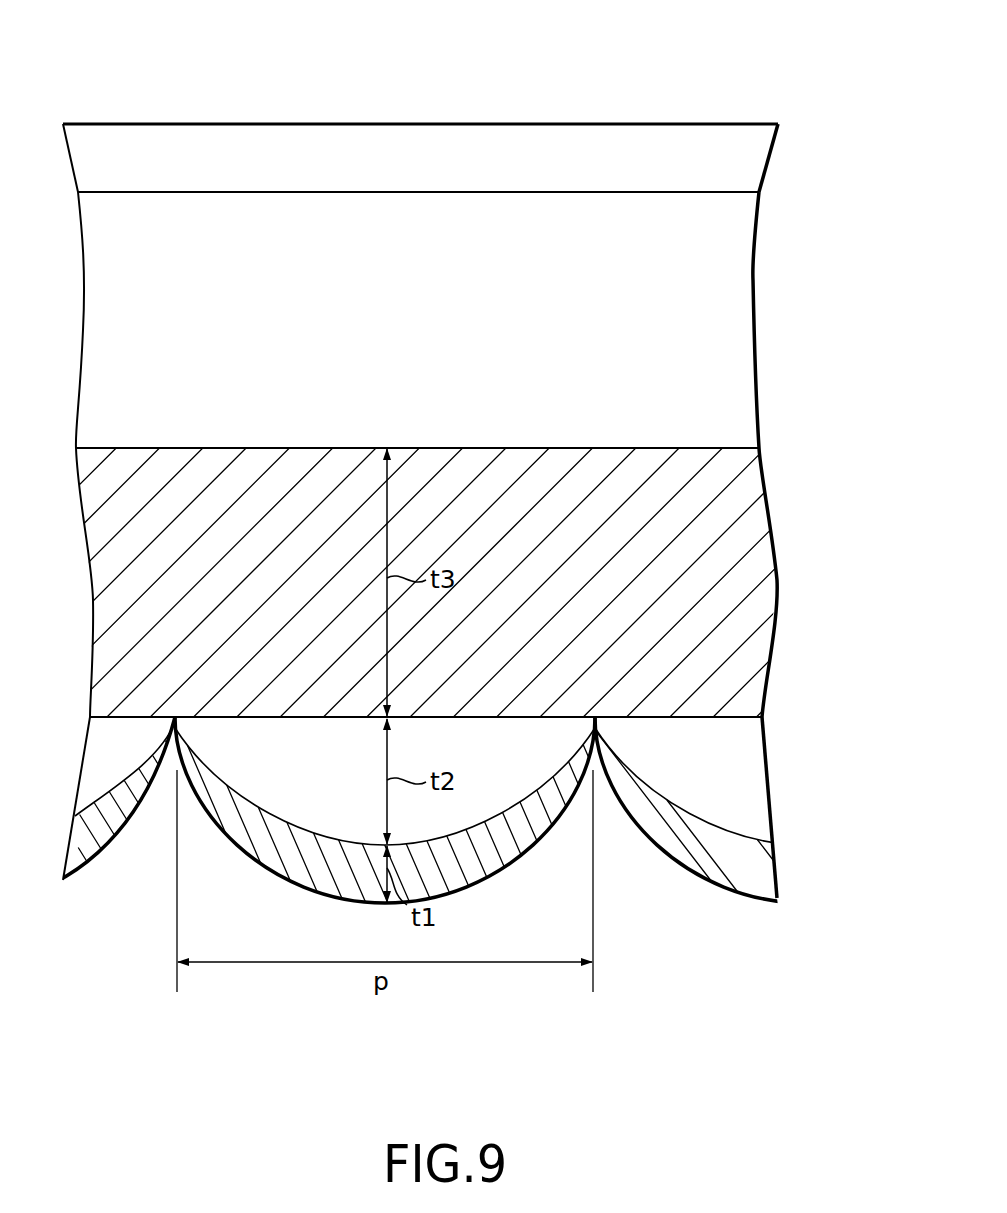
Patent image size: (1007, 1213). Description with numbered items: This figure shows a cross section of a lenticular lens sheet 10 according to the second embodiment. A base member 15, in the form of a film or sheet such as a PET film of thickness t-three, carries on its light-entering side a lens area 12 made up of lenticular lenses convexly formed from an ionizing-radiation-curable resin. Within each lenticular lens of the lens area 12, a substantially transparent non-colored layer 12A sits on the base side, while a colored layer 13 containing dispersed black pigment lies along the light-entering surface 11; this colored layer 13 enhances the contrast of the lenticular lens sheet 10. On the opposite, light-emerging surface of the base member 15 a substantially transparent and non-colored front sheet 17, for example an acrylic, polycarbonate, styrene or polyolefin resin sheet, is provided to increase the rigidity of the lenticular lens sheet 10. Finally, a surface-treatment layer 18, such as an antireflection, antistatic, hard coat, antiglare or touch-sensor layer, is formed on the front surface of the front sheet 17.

The lenticular lens sheet 10 is at (778, 88).
The light-entering surface 11 is at (700, 870).
The lens area 12 is at (857, 763).
The non-colored layer 12A is at (740, 773).
The colored layer 13 is at (748, 862).
The base member 15 is at (740, 606).
The front sheet 17 is at (742, 316).
The surface-treatment layer 18 is at (742, 155).